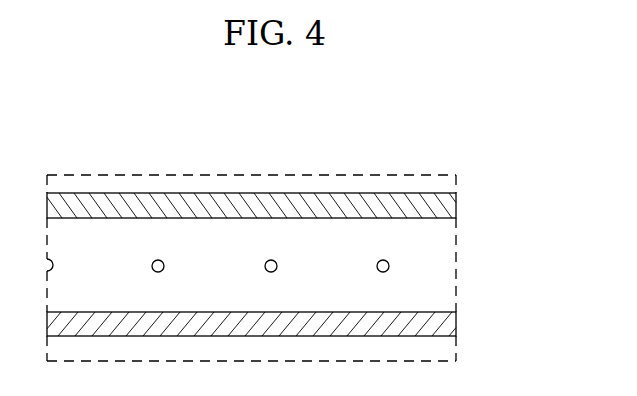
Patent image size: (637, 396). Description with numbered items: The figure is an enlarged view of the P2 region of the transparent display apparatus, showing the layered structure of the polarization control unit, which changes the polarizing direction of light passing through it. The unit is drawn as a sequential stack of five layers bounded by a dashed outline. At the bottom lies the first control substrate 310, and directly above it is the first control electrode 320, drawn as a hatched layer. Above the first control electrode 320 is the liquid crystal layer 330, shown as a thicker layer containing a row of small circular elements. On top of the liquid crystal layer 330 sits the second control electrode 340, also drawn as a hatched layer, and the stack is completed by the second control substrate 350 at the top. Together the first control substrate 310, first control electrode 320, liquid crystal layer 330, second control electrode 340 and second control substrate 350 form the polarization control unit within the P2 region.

The P2 region P2 is at (373, 175).
The first control substrate 310 is at (450, 347).
The first control electrode 320 is at (450, 322).
The liquid crystal layer 330 is at (449, 258).
The second control electrode 340 is at (450, 203).
The second control substrate 350 is at (450, 181).